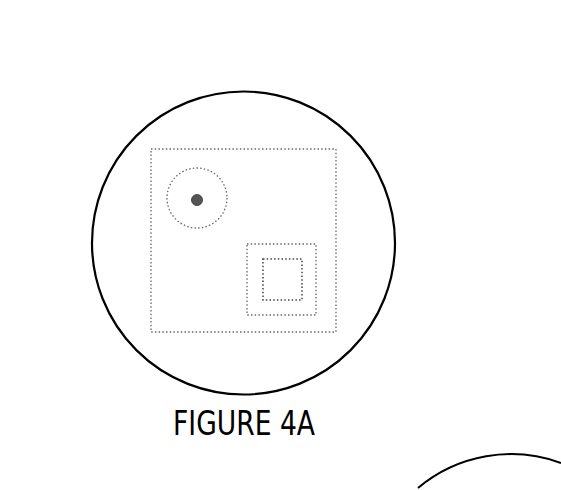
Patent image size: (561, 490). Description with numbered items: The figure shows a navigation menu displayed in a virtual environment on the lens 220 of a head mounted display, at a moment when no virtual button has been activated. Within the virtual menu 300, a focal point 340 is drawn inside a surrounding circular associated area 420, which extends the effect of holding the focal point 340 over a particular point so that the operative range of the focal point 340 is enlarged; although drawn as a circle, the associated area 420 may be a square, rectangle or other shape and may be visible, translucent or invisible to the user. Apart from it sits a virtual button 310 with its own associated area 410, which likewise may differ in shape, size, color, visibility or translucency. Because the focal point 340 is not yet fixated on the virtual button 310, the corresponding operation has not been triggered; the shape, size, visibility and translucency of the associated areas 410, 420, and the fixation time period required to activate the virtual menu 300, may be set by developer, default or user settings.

The lens 220 is at (384, 177).
The virtual menu 300 is at (259, 176).
The virtual button 310 is at (303, 278).
The focal point 340 is at (197, 191).
The associated area of virtual button 410 is at (292, 239).
The associated area of focal point 420 is at (173, 176).